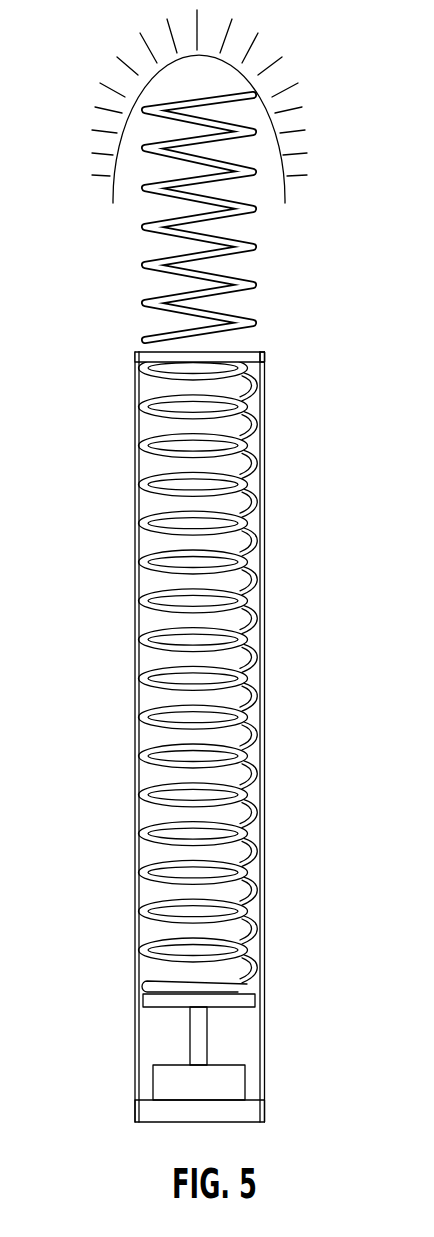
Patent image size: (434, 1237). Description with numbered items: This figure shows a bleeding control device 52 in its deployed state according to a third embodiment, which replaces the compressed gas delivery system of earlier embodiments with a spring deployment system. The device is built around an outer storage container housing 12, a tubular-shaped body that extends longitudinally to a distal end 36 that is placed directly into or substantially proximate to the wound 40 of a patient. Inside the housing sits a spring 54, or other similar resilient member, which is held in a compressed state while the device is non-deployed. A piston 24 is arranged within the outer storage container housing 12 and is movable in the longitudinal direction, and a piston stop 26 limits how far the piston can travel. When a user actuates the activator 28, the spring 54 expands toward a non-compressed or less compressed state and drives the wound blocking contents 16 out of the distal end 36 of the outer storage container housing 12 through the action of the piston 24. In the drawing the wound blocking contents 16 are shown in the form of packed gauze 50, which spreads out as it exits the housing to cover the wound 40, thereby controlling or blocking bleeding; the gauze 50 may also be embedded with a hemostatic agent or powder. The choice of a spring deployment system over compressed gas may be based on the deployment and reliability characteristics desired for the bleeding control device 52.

The outer storage container housing 12 is at (265, 705).
The wound blocking contents 16 is at (251, 217).
The piston 24 is at (263, 363).
The piston stop 26 is at (163, 354).
The activator 28 is at (252, 1109).
The distal end 36 is at (262, 352).
The wound 40 is at (137, 195).
The packed gauze 50 is at (256, 208).
The bleeding control device 52 is at (185, 732).
The spring 54 is at (236, 674).